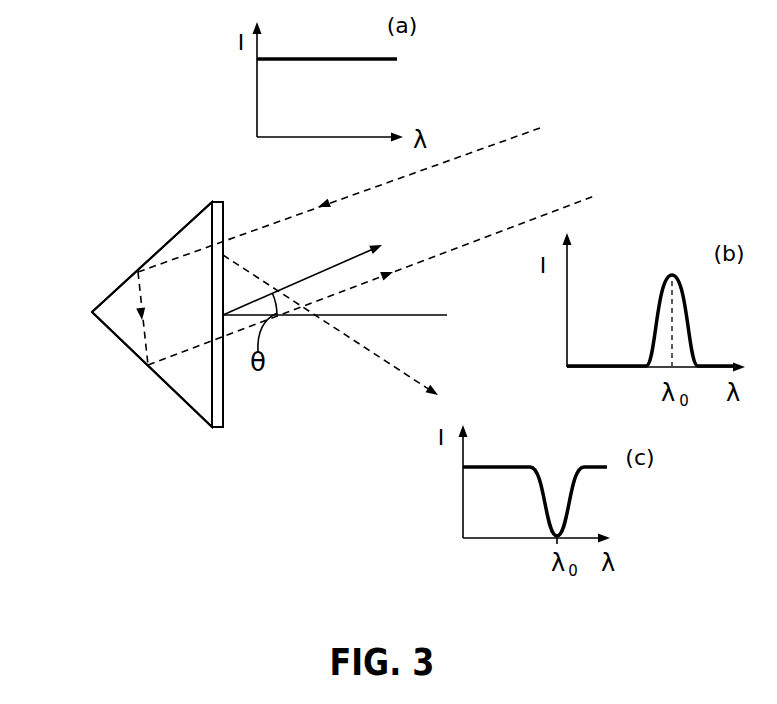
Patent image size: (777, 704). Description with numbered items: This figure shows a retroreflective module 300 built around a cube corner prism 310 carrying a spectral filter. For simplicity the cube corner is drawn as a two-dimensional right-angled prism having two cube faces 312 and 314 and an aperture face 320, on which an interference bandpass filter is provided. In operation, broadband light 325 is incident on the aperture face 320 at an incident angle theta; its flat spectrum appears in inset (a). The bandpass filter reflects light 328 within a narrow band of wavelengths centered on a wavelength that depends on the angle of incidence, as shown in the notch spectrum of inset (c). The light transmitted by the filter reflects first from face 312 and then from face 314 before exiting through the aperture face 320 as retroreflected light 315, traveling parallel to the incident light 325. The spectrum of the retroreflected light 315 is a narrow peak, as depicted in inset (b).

The optical system 300 is at (38, 134).
The cube corner prism 310 is at (54, 284).
The cube face 312 is at (163, 245).
The cube face 314 is at (118, 340).
The aperture face 320 is at (225, 217).
The broadband light 325 is at (363, 193).
The retroreflected light 315 is at (395, 269).
The reflected light 328 is at (402, 373).